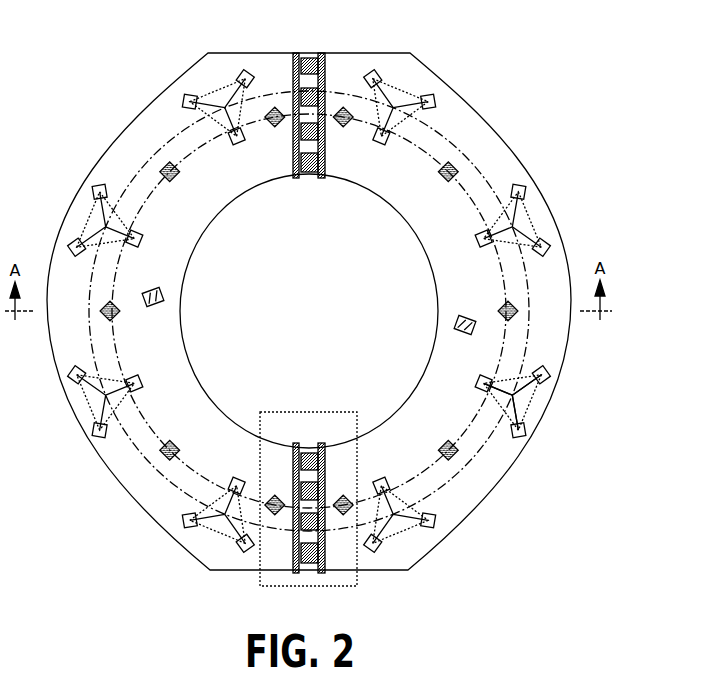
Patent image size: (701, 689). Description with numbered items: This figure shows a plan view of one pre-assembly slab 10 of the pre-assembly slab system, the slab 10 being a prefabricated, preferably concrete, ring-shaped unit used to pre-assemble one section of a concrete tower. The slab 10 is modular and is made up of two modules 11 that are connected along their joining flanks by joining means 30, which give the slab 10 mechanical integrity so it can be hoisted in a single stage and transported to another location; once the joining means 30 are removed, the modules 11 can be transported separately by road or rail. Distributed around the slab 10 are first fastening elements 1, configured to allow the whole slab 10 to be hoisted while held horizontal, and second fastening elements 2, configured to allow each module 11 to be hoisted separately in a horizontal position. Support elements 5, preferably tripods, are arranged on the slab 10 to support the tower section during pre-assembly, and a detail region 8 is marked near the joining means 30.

The pre-assembly slab 10 is at (580, 179).
The module 11 is at (110, 167).
The first fastening element 1 is at (165, 165).
The second fastening element 2 is at (273, 108).
The support element 5 is at (532, 385).
The joining means 30 is at (330, 100).
The detail section 8 is at (360, 580).